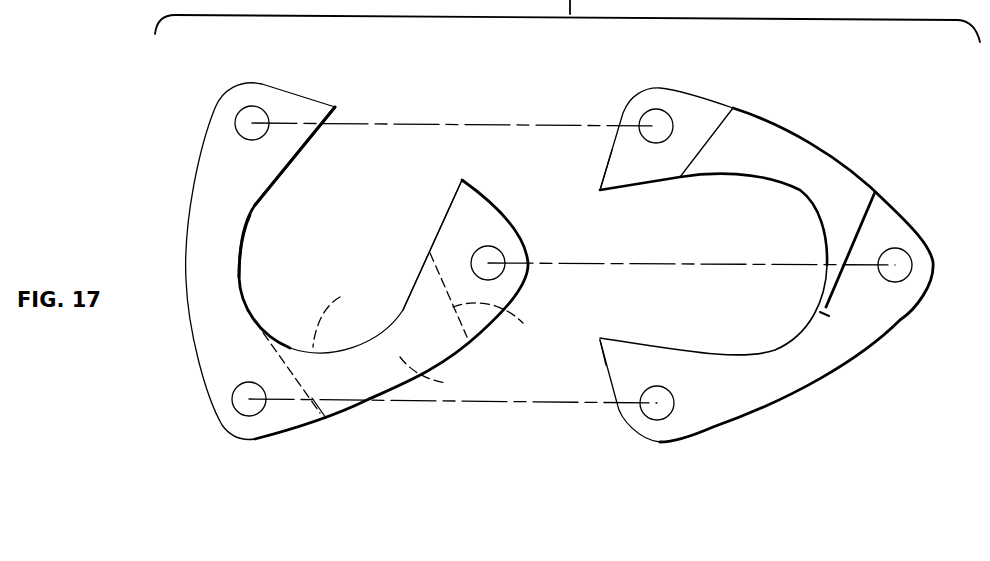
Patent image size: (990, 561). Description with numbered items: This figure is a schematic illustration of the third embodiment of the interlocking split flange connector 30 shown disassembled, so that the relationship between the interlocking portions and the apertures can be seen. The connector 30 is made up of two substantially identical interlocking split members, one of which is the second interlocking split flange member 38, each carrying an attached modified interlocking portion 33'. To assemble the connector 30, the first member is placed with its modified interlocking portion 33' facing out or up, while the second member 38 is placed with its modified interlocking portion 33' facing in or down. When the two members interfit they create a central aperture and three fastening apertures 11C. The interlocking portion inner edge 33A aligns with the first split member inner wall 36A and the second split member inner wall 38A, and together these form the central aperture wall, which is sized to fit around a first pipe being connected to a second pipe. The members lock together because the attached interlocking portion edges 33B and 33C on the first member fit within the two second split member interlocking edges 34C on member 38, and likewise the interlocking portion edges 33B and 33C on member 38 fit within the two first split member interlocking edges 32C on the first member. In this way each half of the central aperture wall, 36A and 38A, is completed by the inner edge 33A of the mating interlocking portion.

The interlocking split flange connector 30 is at (867, 129).
The fastening apertures 11C is at (251, 105).
The second interlocking split flange member 38 is at (337, 230).
The second split member inner wall 38A is at (242, 243).
The second split member interlocking edges 34C is at (298, 160).
The modified interlocking portion 33' is at (544, 260).
The interlocking portion inner edge 33A is at (782, 182).
The interlocking portion edge 33B is at (507, 310).
The interlocking portion edge 33C is at (308, 430).
The first split member interlocking edges 32C is at (635, 190).
The first split member inner wall 36A is at (787, 343).